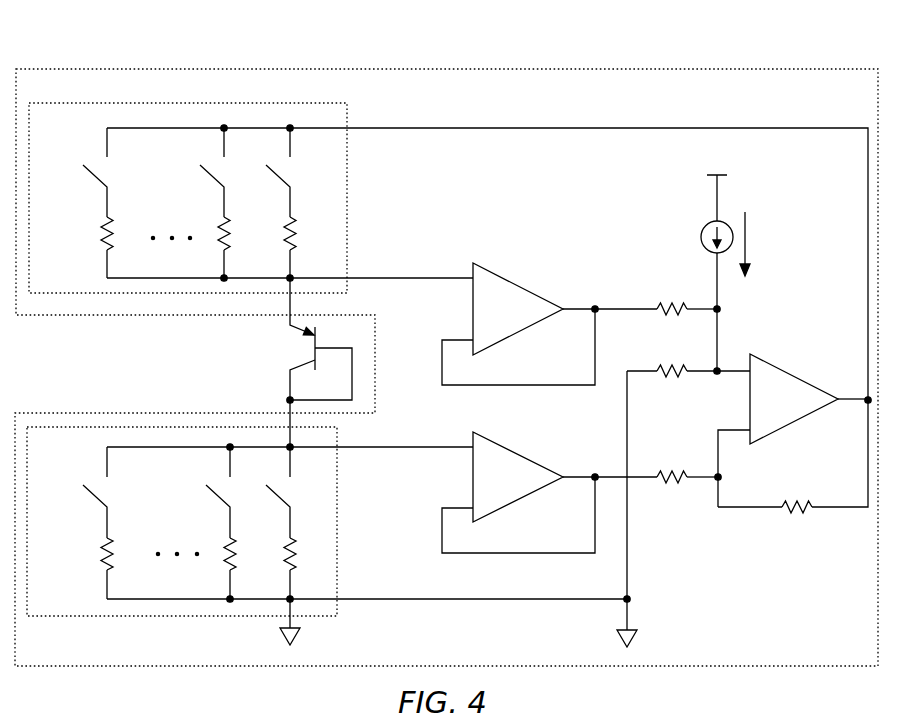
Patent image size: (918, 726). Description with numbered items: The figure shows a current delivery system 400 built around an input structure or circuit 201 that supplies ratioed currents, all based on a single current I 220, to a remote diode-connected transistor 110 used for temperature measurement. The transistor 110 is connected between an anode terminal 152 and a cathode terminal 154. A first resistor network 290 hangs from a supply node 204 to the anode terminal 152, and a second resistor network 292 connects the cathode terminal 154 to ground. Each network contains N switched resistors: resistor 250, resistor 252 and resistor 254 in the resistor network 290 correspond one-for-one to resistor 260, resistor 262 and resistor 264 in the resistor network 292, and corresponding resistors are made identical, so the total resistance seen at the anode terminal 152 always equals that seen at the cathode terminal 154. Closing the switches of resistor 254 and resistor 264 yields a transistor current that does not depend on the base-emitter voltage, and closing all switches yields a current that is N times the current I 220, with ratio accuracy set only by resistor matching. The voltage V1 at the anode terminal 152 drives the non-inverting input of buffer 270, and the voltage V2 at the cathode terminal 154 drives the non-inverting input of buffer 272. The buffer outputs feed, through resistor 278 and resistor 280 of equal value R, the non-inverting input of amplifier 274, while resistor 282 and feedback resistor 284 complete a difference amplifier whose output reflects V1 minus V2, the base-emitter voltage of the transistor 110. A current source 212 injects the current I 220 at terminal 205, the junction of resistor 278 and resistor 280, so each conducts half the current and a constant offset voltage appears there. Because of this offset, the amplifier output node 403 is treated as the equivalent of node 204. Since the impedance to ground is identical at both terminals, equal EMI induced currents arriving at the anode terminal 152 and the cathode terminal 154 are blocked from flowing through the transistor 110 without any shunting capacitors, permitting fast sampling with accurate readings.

The thermal sensing system 400 is at (761, 44).
The input structure/circuit 201 is at (874, 659).
The node 204 is at (435, 127).
The terminal 205 is at (718, 366).
The remote diode-connected transistor 110 is at (316, 337).
The anode terminal 152 is at (289, 281).
The cathode terminal 154 is at (289, 445).
The current source 212 is at (700, 232).
The current I 220 is at (769, 244).
The resistor 250 is at (284, 233).
The resistor 252 is at (218, 233).
The resistor 254 is at (100, 233).
The resistor 260 is at (284, 553).
The resistor 262 is at (224, 553).
The resistor 264 is at (100, 551).
The buffer 270 is at (515, 282).
The buffer 272 is at (517, 452).
The amplifier 274 is at (793, 373).
The resistor 278 is at (662, 316).
The resistor 280 is at (665, 377).
The resistor 282 is at (667, 482).
The resistor 284 is at (797, 513).
The resistor network 290 is at (62, 291).
The resistor network 292 is at (62, 613).
The node 403 is at (866, 396).